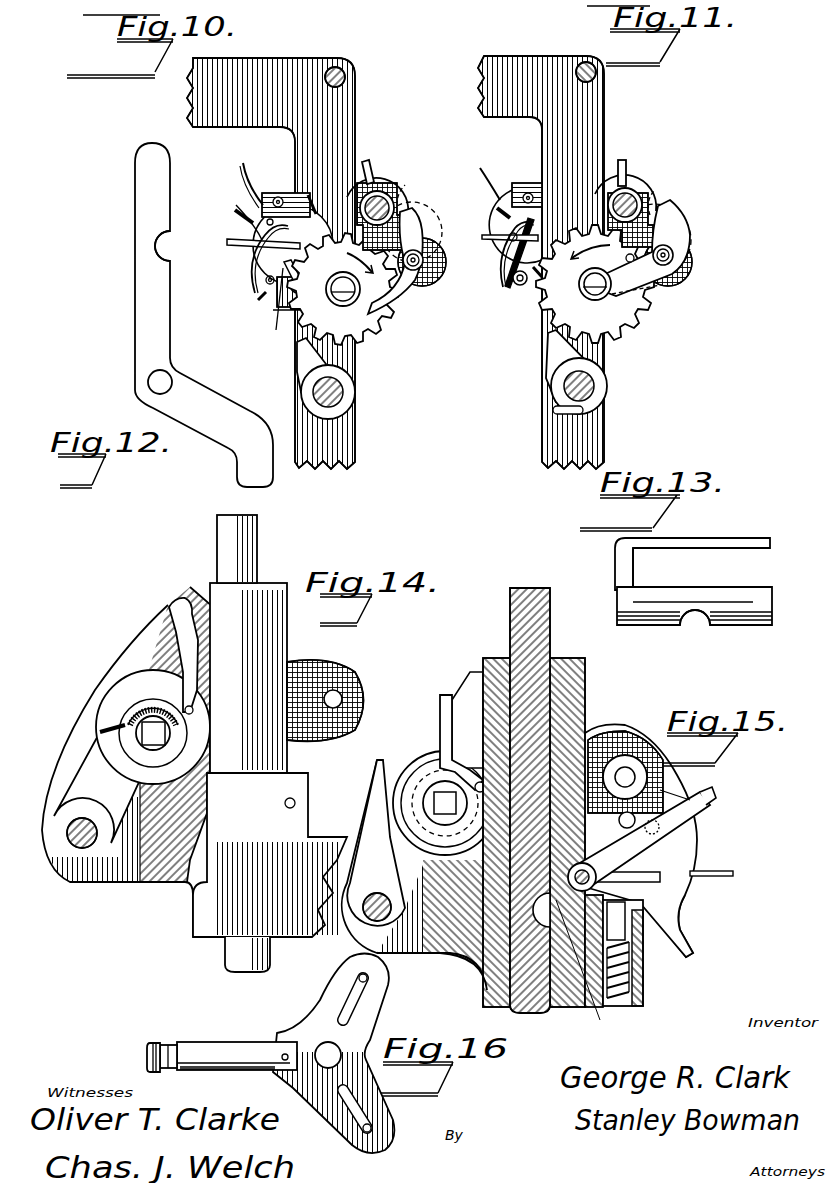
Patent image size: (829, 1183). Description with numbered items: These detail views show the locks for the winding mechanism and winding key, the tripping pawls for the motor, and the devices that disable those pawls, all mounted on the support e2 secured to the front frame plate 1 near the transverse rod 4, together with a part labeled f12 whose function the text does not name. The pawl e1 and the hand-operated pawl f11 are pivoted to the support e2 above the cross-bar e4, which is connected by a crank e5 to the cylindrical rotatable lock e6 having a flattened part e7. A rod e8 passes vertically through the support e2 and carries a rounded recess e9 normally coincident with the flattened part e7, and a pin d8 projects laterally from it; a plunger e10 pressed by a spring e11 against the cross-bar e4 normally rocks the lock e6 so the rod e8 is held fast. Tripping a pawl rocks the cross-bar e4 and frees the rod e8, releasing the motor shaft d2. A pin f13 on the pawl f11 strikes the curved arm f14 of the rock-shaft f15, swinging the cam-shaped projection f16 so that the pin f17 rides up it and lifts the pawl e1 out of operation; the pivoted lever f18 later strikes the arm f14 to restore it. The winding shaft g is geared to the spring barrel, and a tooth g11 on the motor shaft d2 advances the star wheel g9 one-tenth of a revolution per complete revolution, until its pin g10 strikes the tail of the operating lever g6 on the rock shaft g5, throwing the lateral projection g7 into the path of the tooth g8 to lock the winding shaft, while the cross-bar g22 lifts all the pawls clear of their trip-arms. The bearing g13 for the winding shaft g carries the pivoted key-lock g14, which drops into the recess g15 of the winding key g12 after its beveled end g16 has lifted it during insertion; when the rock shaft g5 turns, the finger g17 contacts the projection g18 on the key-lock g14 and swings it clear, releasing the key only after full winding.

In FIG. 10, the front supporting frame 1 is at (345, 118).
In FIG. 11, the front supporting frame 1 is at (520, 110).
In FIG. 10, the transverse rod 4 is at (344, 74).
In FIG. 11, the transverse rod 4 is at (596, 75).
In FIG. 10, the pin f13 is at (256, 258).
In FIG. 11, the pin f13 is at (507, 262).
In FIG. 10, the rock-shaft f15 is at (274, 199).
In FIG. 11, the rock-shaft f15 is at (527, 193).
In FIG. 15, the rock-shaft f15 is at (625, 778).
In FIG. 10, the pin f17 is at (247, 172).
In FIG. 11, the pin f17 is at (496, 190).
In FIG. 15, the pin f17 is at (688, 800).
In FIG. 10, the pawl e1 is at (238, 205).
In FIG. 15, the pawl e1 is at (712, 803).
In FIG. 10, the cam-shaped projection f16 is at (238, 212).
In FIG. 11, the cam-shaped projection f16 is at (505, 208).
In FIG. 15, the cam-shaped projection f16 is at (678, 853).
In FIG. 10, the pawl f11 is at (232, 240).
In FIG. 11, the pawl f11 is at (483, 238).
In FIG. 15, the pawl f11 is at (733, 872).
In FIG. 10, the curved arm f14 is at (255, 291).
In FIG. 11, the curved arm f14 is at (503, 286).
In FIG. 15, the curved arm f14 is at (639, 841).
In FIG. 10, the crank e5 is at (280, 290).
In FIG. 13, the crank e5 is at (626, 575).
In FIG. 10, the pivoted lever f18 is at (293, 289).
In FIG. 11, the pivoted lever f18 is at (518, 283).
In FIG. 10, the rotatable lock e6 is at (306, 303).
In FIG. 13, the rotatable lock e6 is at (748, 593).
In FIG. 15, the rotatable lock e6 is at (563, 903).
In FIG. 10, the cross-bar g22 is at (258, 302).
In FIG. 11, the cross-bar g22 is at (533, 279).
In FIG. 10, the pin f12 is at (312, 212).
In FIG. 10, the operating lever g6 is at (420, 232).
In FIG. 11, the operating lever g6 is at (682, 220).
In FIG. 10, the lateral projection g7 is at (412, 205).
In FIG. 11, the lateral projection g7 is at (672, 208).
In FIG. 10, the tooth g8 is at (413, 197).
In FIG. 11, the tooth g8 is at (665, 188).
In FIG. 10, the star wheel g9 is at (392, 312).
In FIG. 11, the star wheel g9 is at (620, 315).
In FIG. 10, the pin g10 is at (397, 290).
In FIG. 11, the pin g10 is at (588, 268).
In FIG. 10, the projecting finger g17 is at (390, 182).
In FIG. 11, the projecting finger g17 is at (650, 180).
In FIG. 14, the projecting finger g17 is at (76, 753).
In FIG. 15, the projecting finger g17 is at (370, 810).
In FIG. 10, the projection g18 is at (371, 165).
In FIG. 11, the projection g18 is at (630, 186).
In FIG. 14, the projection g18 is at (175, 620).
In FIG. 15, the projection g18 is at (447, 707).
In FIG. 10, the winding shaft g is at (395, 261).
In FIG. 11, the winding shaft g is at (620, 160).
In FIG. 14, the winding shaft g is at (128, 723).
In FIG. 15, the winding shaft g is at (443, 810).
In FIG. 10, the rock shaft g5 is at (425, 262).
In FIG. 11, the rock shaft g5 is at (674, 252).
In FIG. 14, the rock shaft g5 is at (82, 848).
In FIG. 15, the rock shaft g5 is at (363, 907).
In FIG. 10, the projecting tooth g11 is at (310, 363).
In FIG. 11, the projecting tooth g11 is at (550, 350).
In FIG. 10, the motor shaft d2 is at (343, 392).
In FIG. 11, the motor shaft d2 is at (600, 386).
In FIG. 12, the rod e8 is at (140, 205).
In FIG. 14, the rod e8 is at (240, 540).
In FIG. 15, the rod e8 is at (540, 630).
In FIG. 12, the rounded recess e9 is at (168, 258).
In FIG. 15, the rounded recess e9 is at (470, 957).
In FIG. 12, the pin d8 is at (154, 383).
In FIG. 13, the cross-bar e4 is at (718, 540).
In FIG. 15, the cross-bar e4 is at (660, 878).
In FIG. 13, the flattened part e7 is at (693, 617).
In FIG. 15, the flattened part e7 is at (530, 925).
In FIG. 14, the key-lock g14 is at (140, 683).
In FIG. 15, the key-lock g14 is at (420, 768).
In FIG. 14, the bearing g13 is at (100, 730).
In FIG. 14, the support e2 is at (263, 588).
In FIG. 15, the support e2 is at (567, 693).
In FIG. 15, the plunger e10 is at (625, 927).
In FIG. 15, the spring e11 is at (643, 995).
In FIG. 16, the winding key g12 is at (237, 1052).
In FIG. 16, the recess g15 is at (167, 1048).
In FIG. 16, the beveled end g16 is at (148, 1053).